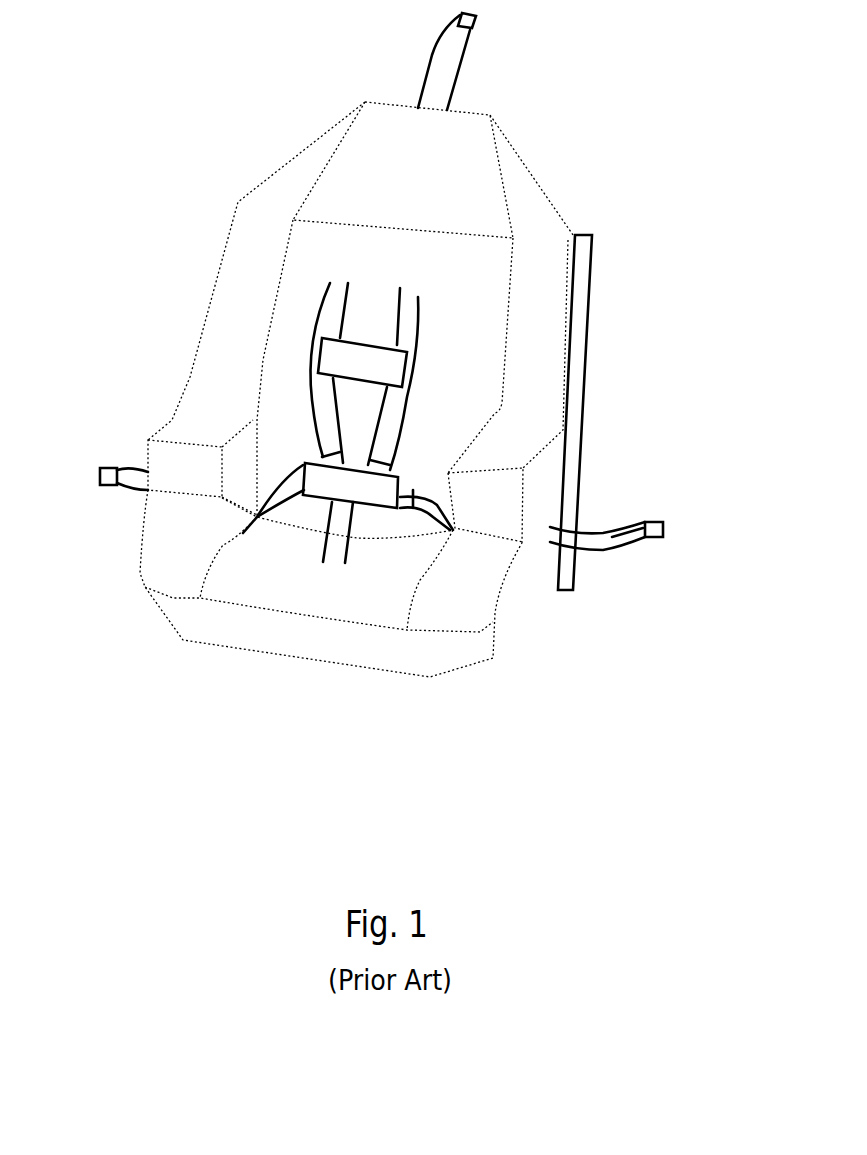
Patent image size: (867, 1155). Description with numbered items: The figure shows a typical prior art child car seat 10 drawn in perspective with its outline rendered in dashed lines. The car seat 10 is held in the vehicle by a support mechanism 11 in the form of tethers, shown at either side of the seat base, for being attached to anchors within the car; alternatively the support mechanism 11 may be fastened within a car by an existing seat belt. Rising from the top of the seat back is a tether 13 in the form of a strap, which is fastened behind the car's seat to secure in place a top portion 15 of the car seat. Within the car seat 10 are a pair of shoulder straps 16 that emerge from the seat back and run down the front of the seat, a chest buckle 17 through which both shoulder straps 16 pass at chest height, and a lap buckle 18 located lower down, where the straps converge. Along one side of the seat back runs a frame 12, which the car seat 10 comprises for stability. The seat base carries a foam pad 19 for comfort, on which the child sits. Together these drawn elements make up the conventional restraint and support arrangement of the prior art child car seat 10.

The child car seat 10 is at (288, 147).
The support mechanism 11 is at (140, 478).
The frame 12 is at (582, 250).
The tether 13 is at (443, 77).
The top portion 15 is at (450, 110).
The shoulder straps 16 is at (328, 328).
The chest buckle 17 is at (363, 359).
The lap buckle 18 is at (327, 468).
The foam pad 19 is at (303, 593).